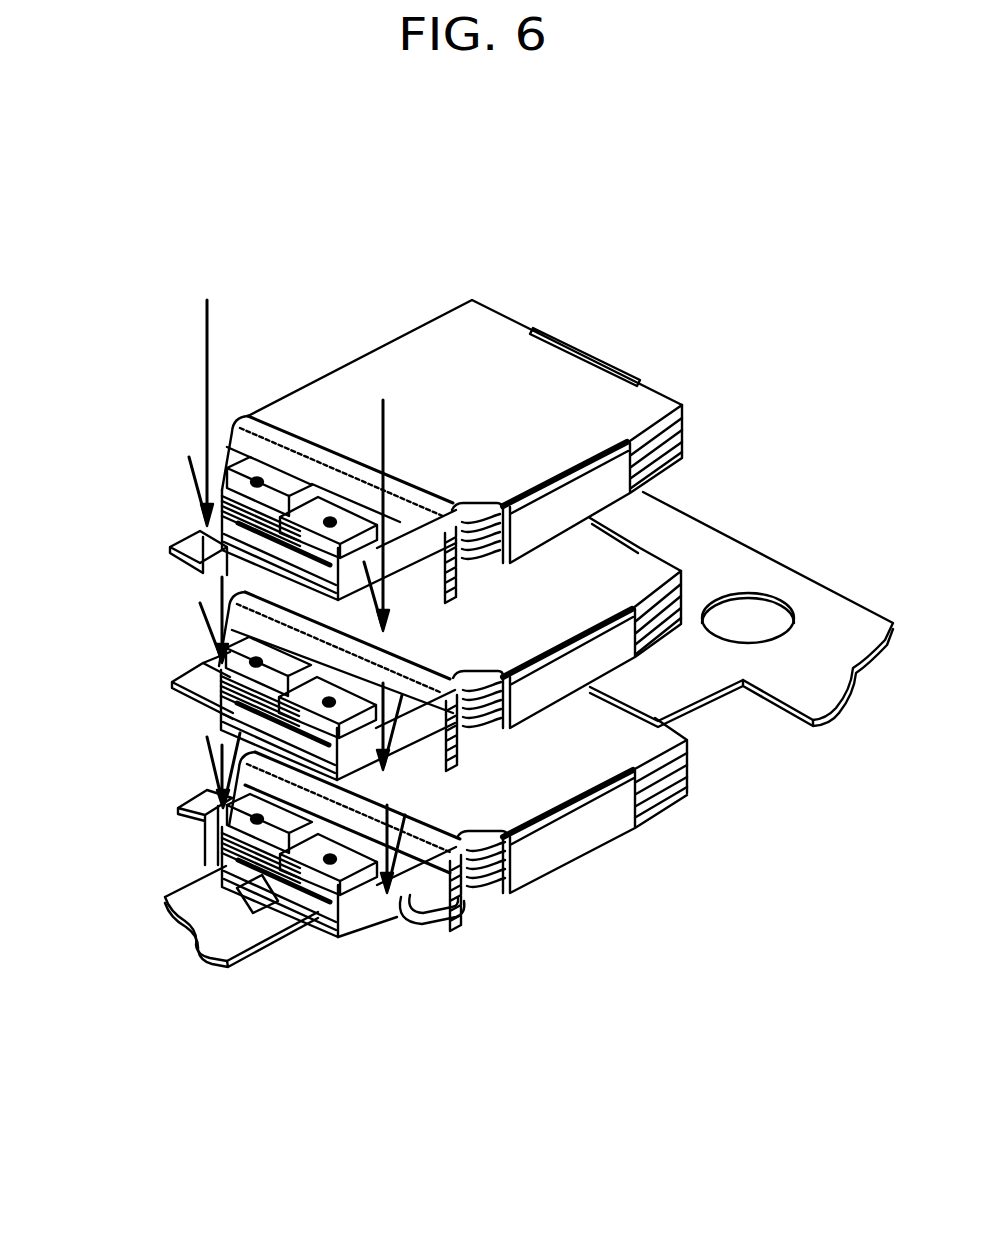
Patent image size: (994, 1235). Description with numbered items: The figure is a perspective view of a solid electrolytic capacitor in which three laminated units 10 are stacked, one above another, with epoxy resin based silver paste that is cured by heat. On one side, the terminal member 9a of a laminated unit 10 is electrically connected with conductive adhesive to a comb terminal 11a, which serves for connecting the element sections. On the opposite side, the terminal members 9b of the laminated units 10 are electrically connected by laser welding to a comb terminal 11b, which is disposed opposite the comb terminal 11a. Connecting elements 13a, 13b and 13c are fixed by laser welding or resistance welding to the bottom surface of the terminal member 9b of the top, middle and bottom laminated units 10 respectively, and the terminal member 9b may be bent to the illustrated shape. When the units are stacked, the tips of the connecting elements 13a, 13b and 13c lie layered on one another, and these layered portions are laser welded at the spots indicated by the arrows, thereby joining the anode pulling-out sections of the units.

The laminated unit 10 is at (433, 338).
The terminal member 9a is at (568, 847).
The terminal member 9b is at (305, 918).
The comb terminal 11a is at (677, 692).
The comb terminal 11b is at (213, 935).
The connecting element 13a is at (190, 553).
The connecting element 13b is at (192, 692).
The connecting element 13c is at (185, 815).